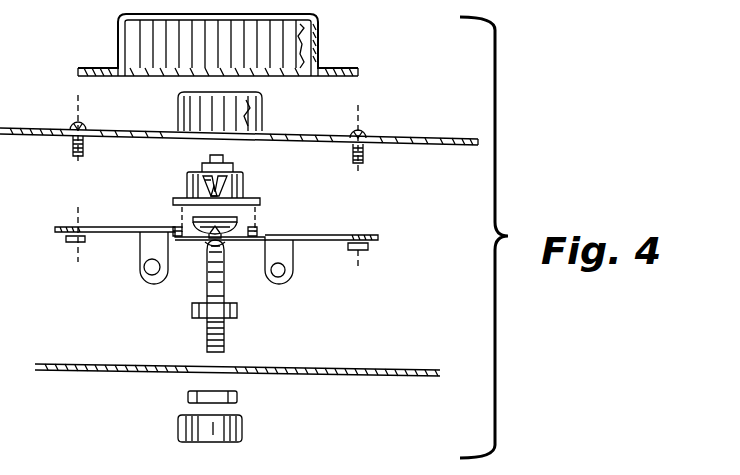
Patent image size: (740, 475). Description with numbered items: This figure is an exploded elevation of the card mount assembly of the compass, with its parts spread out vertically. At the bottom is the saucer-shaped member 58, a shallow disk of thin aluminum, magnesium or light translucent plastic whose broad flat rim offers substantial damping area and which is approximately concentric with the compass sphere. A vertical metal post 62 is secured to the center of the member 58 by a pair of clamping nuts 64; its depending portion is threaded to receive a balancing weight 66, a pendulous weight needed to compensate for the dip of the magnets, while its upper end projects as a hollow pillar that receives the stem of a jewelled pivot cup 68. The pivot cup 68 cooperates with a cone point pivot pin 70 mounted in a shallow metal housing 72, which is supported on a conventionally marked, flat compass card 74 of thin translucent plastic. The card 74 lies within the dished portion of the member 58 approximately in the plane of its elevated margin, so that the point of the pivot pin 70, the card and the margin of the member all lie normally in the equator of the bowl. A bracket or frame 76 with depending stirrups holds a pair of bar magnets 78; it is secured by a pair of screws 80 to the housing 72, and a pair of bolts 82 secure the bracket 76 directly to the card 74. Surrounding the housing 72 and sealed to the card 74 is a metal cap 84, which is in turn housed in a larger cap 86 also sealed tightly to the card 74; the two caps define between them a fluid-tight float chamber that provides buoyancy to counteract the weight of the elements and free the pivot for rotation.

The saucer-shaped member 58 is at (300, 370).
The vertical metal post 62 is at (210, 262).
The clamping nuts 64 is at (195, 310).
The balancing weight 66 is at (178, 429).
The jewelled pivot cup 68 is at (192, 222).
The cone point pivot pin 70 is at (245, 185).
The shallow metal housing 72 is at (187, 183).
The compass card 74 is at (440, 138).
The bracket or frame 76 is at (148, 249).
The bar magnets 78 is at (150, 267).
The screws 80 is at (258, 229).
The bolts 82 is at (85, 149).
The metal cap 84 is at (262, 124).
The larger cap 86 is at (135, 33).